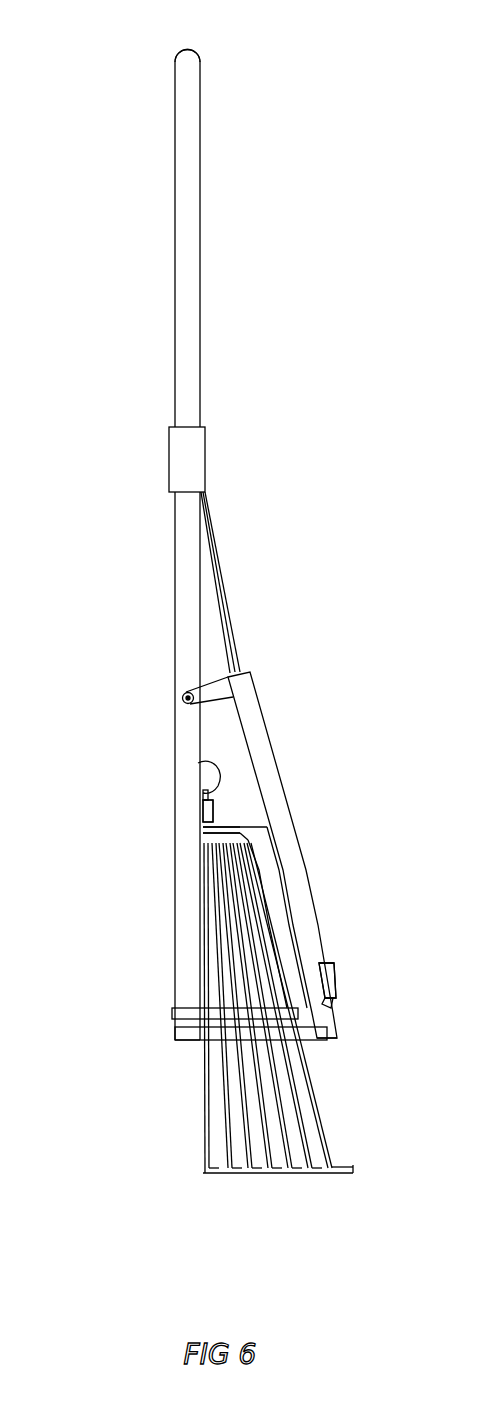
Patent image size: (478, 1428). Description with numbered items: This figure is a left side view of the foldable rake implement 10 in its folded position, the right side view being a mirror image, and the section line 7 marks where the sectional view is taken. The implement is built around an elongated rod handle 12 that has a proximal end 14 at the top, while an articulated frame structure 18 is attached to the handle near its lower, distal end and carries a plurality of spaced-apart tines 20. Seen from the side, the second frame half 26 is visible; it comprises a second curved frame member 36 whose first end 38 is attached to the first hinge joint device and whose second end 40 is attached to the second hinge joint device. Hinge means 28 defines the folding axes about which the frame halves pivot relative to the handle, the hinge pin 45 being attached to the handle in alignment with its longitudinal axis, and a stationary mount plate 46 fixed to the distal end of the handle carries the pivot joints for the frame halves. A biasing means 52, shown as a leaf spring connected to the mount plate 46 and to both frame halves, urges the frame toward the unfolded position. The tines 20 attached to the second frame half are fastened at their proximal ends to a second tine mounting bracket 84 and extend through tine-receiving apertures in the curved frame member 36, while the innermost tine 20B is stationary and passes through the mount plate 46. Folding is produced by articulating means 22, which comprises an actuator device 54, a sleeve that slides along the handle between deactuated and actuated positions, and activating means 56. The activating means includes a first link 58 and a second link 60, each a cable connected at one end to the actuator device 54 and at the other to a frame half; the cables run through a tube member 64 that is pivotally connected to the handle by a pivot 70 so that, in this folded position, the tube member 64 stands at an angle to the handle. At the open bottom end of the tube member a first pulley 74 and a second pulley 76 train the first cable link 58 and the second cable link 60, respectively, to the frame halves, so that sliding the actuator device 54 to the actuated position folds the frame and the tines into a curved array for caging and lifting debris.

The foldable rake implement 10 is at (280, 86).
The elongated rod handle 12 is at (198, 125).
The proximal end 14 is at (195, 63).
The articulated frame structure 18 is at (391, 807).
The tines 20 is at (287, 1135).
The innermost tine 20B is at (205, 1130).
The articulating means 22 is at (369, 598).
The second frame half 26 is at (347, 1042).
The hinge means 28 is at (183, 805).
The second curved frame member 36 is at (260, 858).
The first end 38 is at (228, 812).
The second end 40 is at (193, 1047).
The hinge pin 45 is at (198, 763).
The stationary mount plate 46 is at (176, 1032).
The biasing means 52 is at (180, 1010).
The actuator device 54 is at (223, 428).
The activating means 56 is at (359, 757).
The first link 58 is at (215, 520).
The second link 60 is at (210, 540).
The tube member 64 is at (253, 737).
The pivot 70 is at (183, 696).
The first pulley 74 is at (337, 987).
The second pulley 76 is at (316, 962).
The second tine mounting bracket 84 is at (200, 838).
The section line 7- 7 is at (87, 1187).